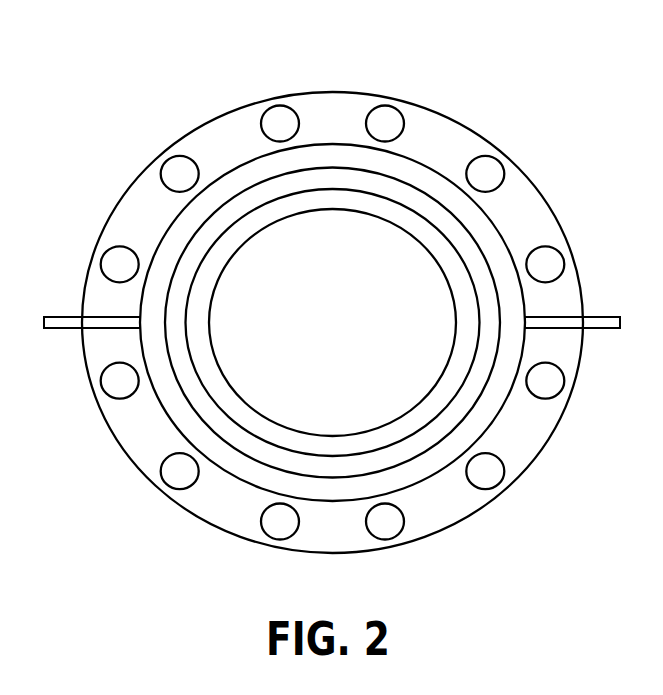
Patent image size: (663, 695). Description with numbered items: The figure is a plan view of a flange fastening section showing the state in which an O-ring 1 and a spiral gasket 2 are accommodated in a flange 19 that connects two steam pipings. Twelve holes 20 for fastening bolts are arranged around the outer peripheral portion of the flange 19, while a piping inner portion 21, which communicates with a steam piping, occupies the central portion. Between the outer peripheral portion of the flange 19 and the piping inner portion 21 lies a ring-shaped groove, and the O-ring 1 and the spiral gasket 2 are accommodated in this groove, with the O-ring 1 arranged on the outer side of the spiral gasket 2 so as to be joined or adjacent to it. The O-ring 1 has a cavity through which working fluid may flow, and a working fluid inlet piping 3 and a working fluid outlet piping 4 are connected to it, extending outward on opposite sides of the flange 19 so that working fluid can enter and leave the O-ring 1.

The O-ring 1 is at (339, 150).
The spiral gasket 2 is at (422, 202).
The working fluid inlet piping 3 is at (603, 328).
The working fluid outlet piping 4 is at (70, 328).
The flange 19 is at (205, 508).
The holes for fastening bolts 20 is at (170, 165).
The piping inner portion 21 is at (393, 412).